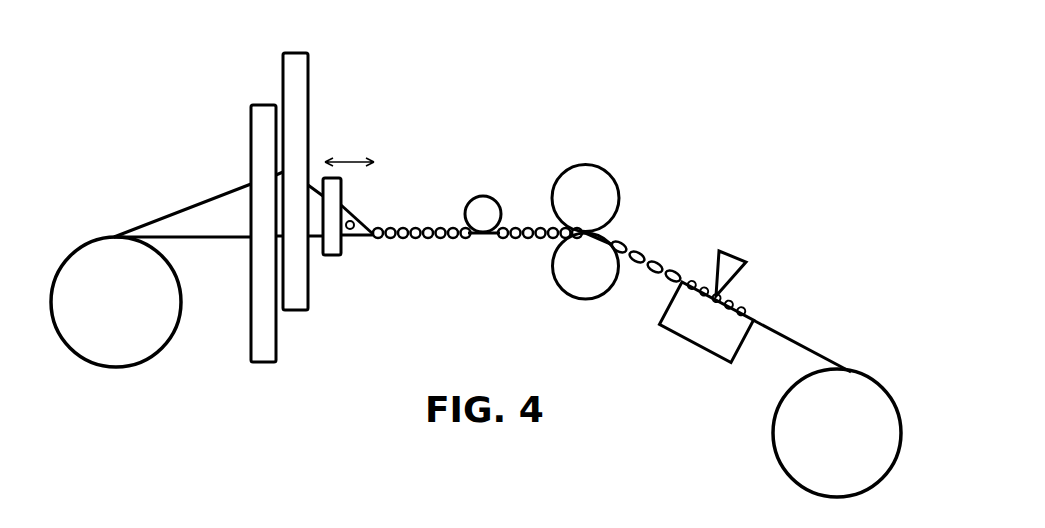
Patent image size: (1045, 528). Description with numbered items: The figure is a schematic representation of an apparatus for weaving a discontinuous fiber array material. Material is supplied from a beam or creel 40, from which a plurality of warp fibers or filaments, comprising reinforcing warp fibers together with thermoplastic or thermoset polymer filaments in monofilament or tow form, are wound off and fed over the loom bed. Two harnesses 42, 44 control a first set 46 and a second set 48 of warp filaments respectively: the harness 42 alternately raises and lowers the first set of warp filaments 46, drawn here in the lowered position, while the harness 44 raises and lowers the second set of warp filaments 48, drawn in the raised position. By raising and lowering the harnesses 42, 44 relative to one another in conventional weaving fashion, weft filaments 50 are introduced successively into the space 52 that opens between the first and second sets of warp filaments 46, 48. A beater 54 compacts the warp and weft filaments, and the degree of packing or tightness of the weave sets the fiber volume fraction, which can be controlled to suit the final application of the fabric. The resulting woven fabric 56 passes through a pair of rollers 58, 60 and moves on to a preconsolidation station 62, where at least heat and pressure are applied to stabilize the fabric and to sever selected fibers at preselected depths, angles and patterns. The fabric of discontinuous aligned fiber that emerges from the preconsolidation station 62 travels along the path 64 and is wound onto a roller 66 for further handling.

The beam or creel 40 is at (165, 352).
The harness 42 is at (270, 363).
The harness 44 is at (302, 312).
The first set of warp filaments 46 is at (200, 238).
The second set of warp filaments 48 is at (202, 203).
The weft filaments 50 is at (415, 235).
The space 52 is at (347, 212).
The beater 54 is at (333, 252).
The woven fabric 56 is at (537, 237).
The roller 58 is at (618, 190).
The roller 60 is at (573, 297).
The preconsolidation station 62 is at (693, 345).
The finished strand 64 is at (797, 338).
The roller 66 is at (773, 437).